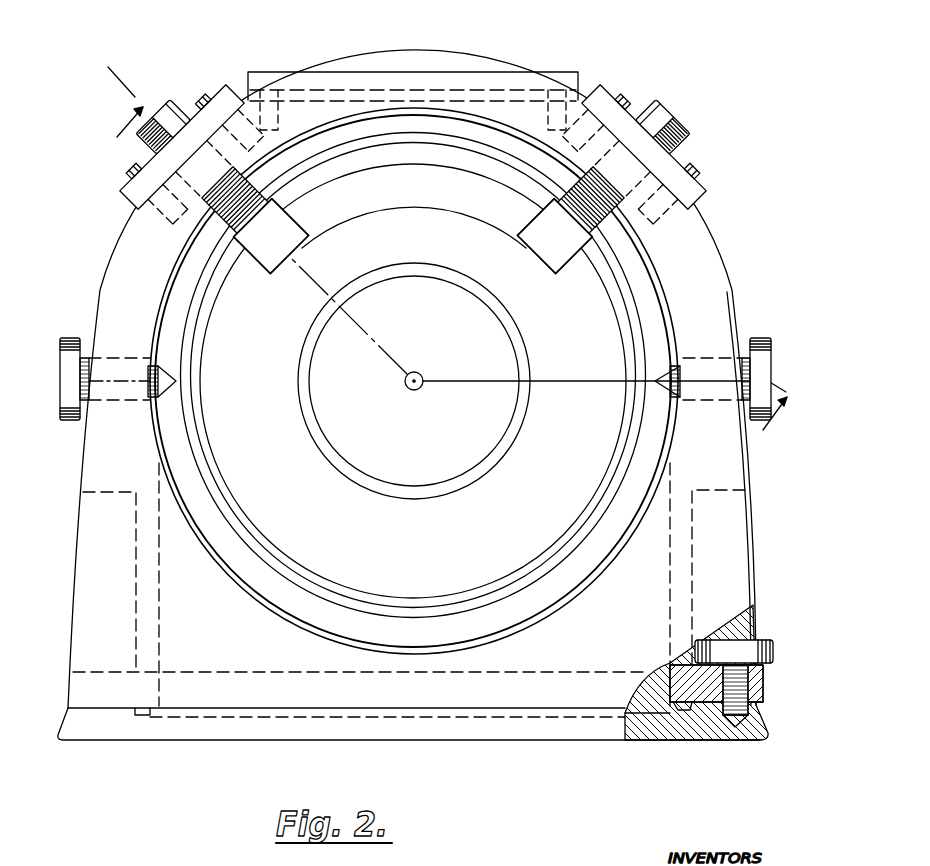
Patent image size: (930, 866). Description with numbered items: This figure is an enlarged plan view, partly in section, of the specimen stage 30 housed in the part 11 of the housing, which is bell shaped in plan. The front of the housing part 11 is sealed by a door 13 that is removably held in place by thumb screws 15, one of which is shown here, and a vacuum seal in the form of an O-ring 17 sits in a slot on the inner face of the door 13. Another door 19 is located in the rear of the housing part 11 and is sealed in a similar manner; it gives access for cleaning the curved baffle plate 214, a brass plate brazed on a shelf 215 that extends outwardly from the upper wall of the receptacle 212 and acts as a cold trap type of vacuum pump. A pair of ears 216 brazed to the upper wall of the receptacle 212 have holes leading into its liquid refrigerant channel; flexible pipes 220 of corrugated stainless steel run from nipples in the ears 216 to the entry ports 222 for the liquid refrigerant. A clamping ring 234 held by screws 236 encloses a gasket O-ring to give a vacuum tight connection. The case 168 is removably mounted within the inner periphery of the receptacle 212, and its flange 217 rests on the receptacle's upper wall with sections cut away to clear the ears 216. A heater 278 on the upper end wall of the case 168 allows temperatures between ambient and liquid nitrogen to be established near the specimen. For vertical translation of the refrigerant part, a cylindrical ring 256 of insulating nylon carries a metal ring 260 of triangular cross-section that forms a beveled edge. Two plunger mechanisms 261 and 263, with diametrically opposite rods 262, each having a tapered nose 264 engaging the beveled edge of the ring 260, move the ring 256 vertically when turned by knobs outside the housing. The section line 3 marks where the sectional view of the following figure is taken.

The section line 3- 3 is at (445, 259).
The housing part 11 is at (690, 218).
The door 13 is at (640, 740).
The thumb screws 15 is at (740, 650).
The O-ring 17 is at (680, 740).
The rear door 19 is at (552, 72).
The specimen stage 30 is at (558, 459).
The case 168 is at (275, 530).
The receptacle 212 is at (322, 210).
The curved baffle plate 214 is at (505, 160).
The shelf 215 is at (392, 166).
The ears 216 is at (286, 272).
The flange 217 is at (256, 266).
The flexible pipes 220 is at (232, 184).
The entry ports 222 is at (160, 105).
The clamping ring 234 is at (233, 90).
The screws 236 is at (209, 96).
The cylindrical ring 256 is at (590, 520).
The metal ring 260 is at (585, 565).
The plunger mechanism 261 is at (757, 336).
The rods 262 is at (152, 364).
The plunger mechanism 263 is at (70, 336).
The tapered nose 264 is at (165, 392).
The heater 278 is at (440, 300).